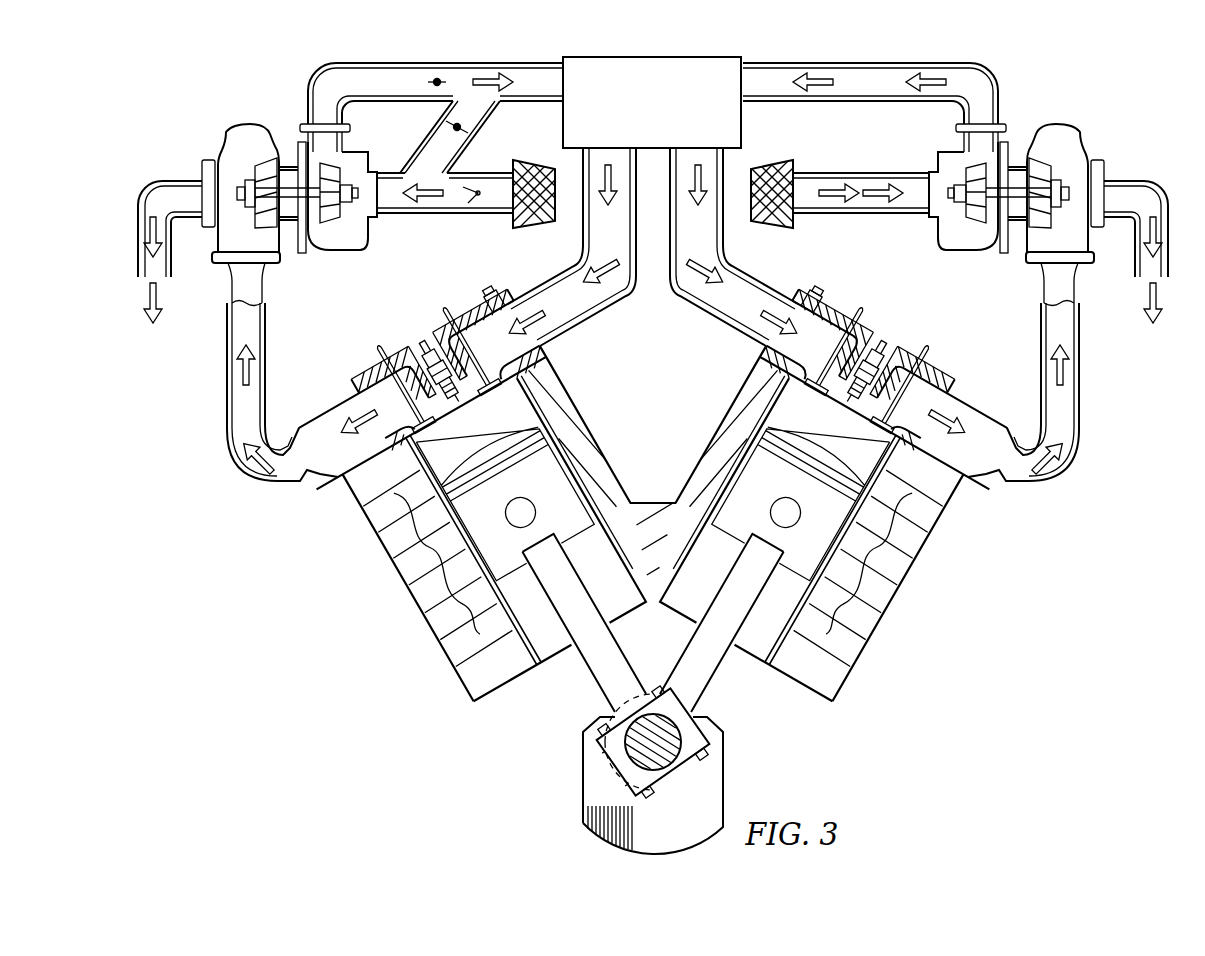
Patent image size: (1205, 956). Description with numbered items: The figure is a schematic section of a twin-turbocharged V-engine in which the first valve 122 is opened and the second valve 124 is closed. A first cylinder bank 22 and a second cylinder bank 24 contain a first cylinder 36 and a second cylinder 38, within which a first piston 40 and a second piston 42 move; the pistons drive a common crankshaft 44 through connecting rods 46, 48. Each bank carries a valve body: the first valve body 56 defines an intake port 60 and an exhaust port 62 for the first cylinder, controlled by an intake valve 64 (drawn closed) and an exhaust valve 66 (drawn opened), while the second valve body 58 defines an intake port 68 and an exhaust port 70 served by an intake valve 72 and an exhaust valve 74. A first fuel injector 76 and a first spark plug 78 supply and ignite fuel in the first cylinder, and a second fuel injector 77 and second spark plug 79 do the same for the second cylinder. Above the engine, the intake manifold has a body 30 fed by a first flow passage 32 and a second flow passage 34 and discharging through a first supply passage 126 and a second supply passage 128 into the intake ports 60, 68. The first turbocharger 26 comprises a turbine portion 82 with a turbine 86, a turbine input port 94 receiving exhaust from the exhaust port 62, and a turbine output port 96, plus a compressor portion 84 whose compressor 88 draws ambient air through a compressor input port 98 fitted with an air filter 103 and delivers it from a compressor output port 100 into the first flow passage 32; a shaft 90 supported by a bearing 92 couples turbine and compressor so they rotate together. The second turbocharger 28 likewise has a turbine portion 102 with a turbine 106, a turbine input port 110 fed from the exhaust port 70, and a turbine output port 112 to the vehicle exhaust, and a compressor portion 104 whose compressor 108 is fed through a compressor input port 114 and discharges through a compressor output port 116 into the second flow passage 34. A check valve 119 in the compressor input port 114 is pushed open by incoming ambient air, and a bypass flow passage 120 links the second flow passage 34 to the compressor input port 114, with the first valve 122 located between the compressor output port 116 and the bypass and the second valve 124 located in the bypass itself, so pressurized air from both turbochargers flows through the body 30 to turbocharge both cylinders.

The first cylinder bank 22 is at (892, 300).
The second cylinder bank 24 is at (386, 312).
The first turbocharger 26 is at (1139, 108).
The second turbocharger 28 is at (172, 108).
The body 30 is at (640, 113).
The first flow passage 32 is at (960, 63).
The second flow passage 34 is at (340, 63).
The first cylinder 36 is at (922, 520).
The second cylinder 38 is at (392, 532).
The first piston 40 is at (898, 578).
The second piston 42 is at (406, 578).
The crankshaft 44 is at (612, 790).
The connecting rod 46 is at (703, 672).
The connecting rod 48 is at (602, 672).
The first valve body 56 is at (753, 352).
The second valve body 58 is at (553, 352).
The intake port 60 is at (756, 398).
The exhaust port 62 is at (950, 415).
The intake valve 64 is at (840, 340).
The exhaust valve 66 is at (905, 380).
The intake port 68 is at (548, 402).
The exhaust port 70 is at (358, 412).
The intake valve 72 is at (468, 336).
The exhaust valve 74 is at (383, 352).
The first fuel injector 76 is at (810, 296).
The second fuel injector 77 is at (498, 296).
The first spark plug 78 is at (878, 358).
The second spark plug 79 is at (430, 352).
The turbine portion 82 is at (1090, 155).
The compressor portion 84 is at (958, 152).
The turbine 86 is at (1048, 222).
The compressor 88 is at (940, 223).
The shaft 90 is at (1013, 185).
The bearing 92 is at (1002, 240).
The turbine input port 94 is at (1054, 268).
The turbine output port 96 is at (1113, 190).
The compressor input port 98 is at (932, 188).
The compressor output port 100 is at (985, 118).
The turbine portion 102 is at (215, 162).
The air filter 103 is at (775, 157).
The compressor portion 104 is at (355, 150).
The turbine 106 is at (262, 222).
The compressor 108 is at (348, 236).
The turbine input port 110 is at (252, 268).
The turbine output port 112 is at (194, 190).
The compressor input port 114 is at (385, 205).
The compressor output port 116 is at (320, 120).
The check valve 119 is at (478, 203).
The bypass flow passage 120 is at (482, 142).
The first valve 122 is at (437, 76).
The second valve 124 is at (468, 127).
The first supply passage 126 is at (722, 240).
The second supply passage 128 is at (628, 298).